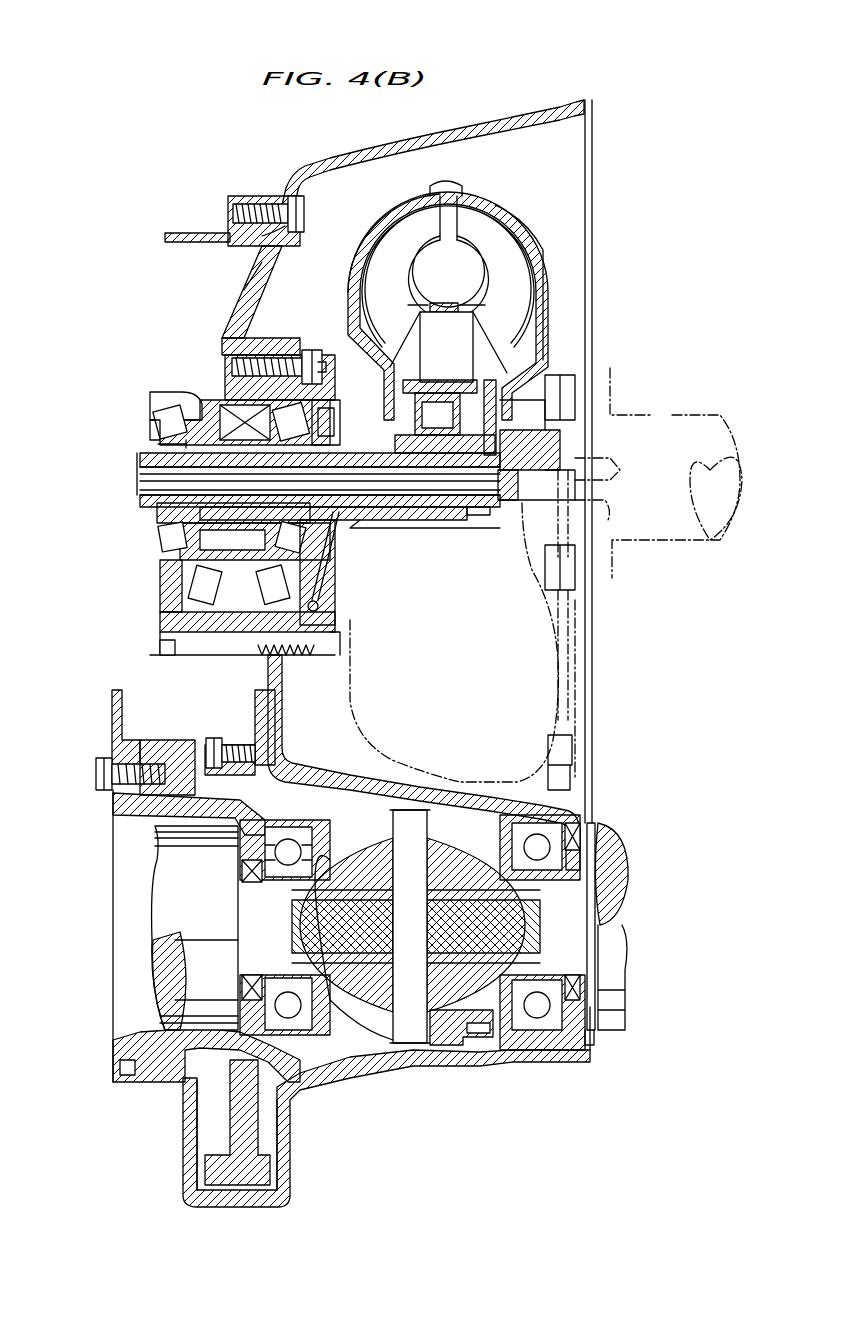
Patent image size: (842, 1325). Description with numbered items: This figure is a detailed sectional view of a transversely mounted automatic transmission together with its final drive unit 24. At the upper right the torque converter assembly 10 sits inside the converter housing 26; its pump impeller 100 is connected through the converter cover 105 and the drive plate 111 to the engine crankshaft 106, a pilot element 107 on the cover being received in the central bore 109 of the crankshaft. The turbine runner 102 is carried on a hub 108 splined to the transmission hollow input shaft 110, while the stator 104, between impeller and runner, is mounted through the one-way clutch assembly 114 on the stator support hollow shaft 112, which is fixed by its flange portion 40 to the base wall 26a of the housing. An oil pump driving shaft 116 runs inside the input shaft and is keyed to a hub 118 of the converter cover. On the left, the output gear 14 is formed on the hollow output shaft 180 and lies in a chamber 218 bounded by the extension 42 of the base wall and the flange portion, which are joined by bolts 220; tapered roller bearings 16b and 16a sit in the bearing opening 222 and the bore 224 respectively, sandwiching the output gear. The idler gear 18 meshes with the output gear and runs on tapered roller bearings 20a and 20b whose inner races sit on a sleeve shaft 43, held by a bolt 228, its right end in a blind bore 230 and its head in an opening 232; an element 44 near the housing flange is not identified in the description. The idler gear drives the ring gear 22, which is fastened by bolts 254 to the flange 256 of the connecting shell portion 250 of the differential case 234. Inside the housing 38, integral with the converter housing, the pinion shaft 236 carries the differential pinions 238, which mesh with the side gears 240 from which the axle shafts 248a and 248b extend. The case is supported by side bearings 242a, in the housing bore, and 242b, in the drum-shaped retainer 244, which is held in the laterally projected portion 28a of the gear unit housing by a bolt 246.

The torque converter assembly 10 is at (537, 181).
The output gear 14 is at (240, 400).
The tapered roller bearing 16a is at (258, 370).
The tapered roller bearing 16b is at (158, 428).
The idler gear 18 is at (322, 590).
The tapered roller bearing 20a is at (340, 625).
The tapered roller bearing 20b is at (200, 598).
The ring gear 22 is at (282, 700).
The final drive unit 24 is at (373, 1121).
The converter housing 26 is at (466, 128).
The base wall 26a is at (268, 284).
The laterally projected portion 28a is at (188, 1116).
The housing 38 is at (560, 822).
The flange portion 40 is at (290, 352).
The extension 42 is at (150, 396).
The sleeve shaft 43 is at (160, 634).
The bolt 44 is at (258, 262).
The pump impeller 100 is at (400, 222).
The turbine runner 102 is at (525, 270).
The stator 104 is at (466, 326).
The converter cover 105 is at (546, 256).
The crankshaft 106 is at (676, 432).
The pilot element 107 is at (622, 468).
The hub 108 is at (540, 448).
The central bore 109 is at (612, 506).
The transmission hollow input shaft 110 is at (462, 520).
The drive plate 111 is at (580, 636).
The stator support hollow shaft 112 is at (436, 520).
The torque converter one-way clutch assembly 114 is at (442, 380).
The oil pump driving shaft 116 is at (506, 500).
The hub 118 is at (556, 448).
The transmission hollow output shaft 180 is at (140, 466).
The chamber 218 is at (248, 326).
The bolts 220 is at (316, 350).
The bearing opening 222 is at (150, 412).
The bearing opening 224 is at (318, 404).
The bolt 228 is at (200, 654).
The blind bore 230 is at (300, 652).
The opening 232 is at (160, 612).
The differential case 234 is at (360, 1040).
The differential pinion shaft 236 is at (470, 1045).
The differential pinions 238 is at (432, 830).
The differential side gears 240 is at (500, 960).
The differential side bearing 242a is at (530, 1010).
The differential side bearing 242b is at (248, 1000).
The drum-shaped retainer 244 is at (120, 1033).
The bolt 246 is at (96, 770).
The axle shaft 248a is at (626, 1006).
The axle shaft 248b is at (170, 1004).
The connecting shell portion 250 is at (232, 842).
The bolts 254 is at (204, 750).
The flange 256 is at (270, 730).